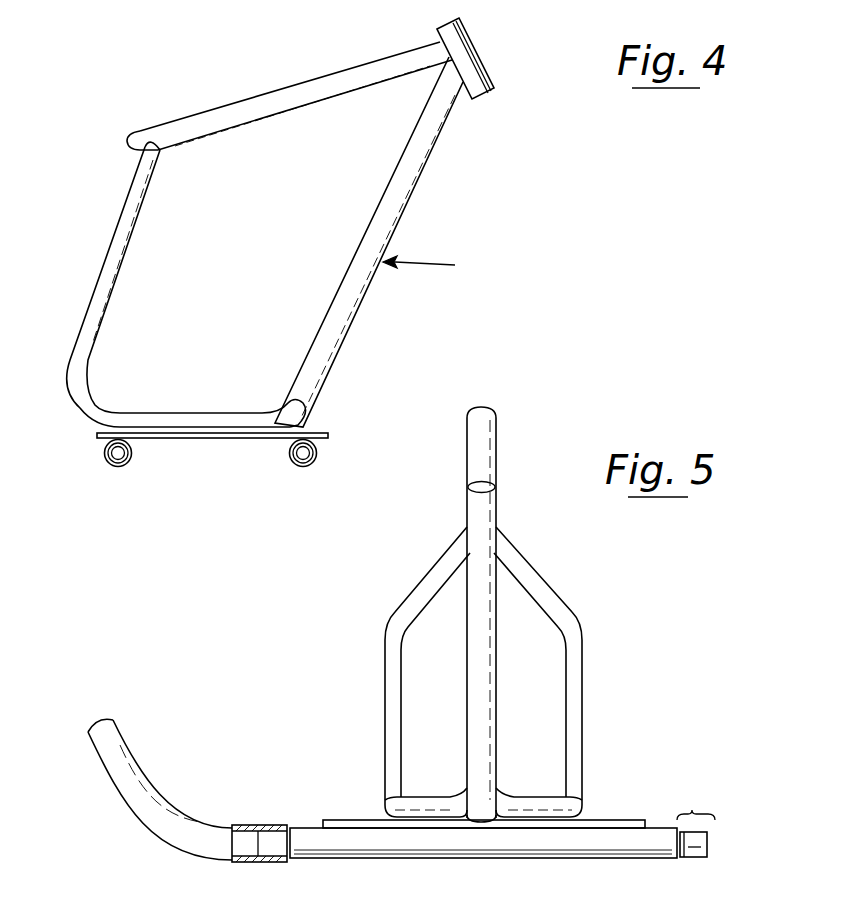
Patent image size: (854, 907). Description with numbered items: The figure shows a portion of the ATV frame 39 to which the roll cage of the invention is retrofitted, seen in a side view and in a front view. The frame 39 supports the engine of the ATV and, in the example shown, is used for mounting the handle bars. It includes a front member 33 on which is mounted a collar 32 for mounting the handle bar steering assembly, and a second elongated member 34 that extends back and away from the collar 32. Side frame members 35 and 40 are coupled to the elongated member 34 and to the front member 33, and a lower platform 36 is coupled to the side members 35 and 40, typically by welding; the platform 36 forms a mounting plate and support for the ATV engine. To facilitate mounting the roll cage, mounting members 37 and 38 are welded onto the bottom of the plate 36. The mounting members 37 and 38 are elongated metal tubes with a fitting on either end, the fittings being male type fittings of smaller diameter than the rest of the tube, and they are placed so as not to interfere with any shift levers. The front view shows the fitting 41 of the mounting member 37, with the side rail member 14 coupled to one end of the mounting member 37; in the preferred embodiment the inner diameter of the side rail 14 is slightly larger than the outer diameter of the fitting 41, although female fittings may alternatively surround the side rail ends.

In FIG. 5, the side rail member 14 is at (145, 787).
In FIG. 4, the collar 32 is at (472, 67).
In FIG. 5, the collar 32 is at (485, 448).
In FIG. 4, the front member 33 is at (413, 181).
In FIG. 5, the front member 33 is at (487, 689).
In FIG. 4, the second elongated member 34 is at (302, 88).
In FIG. 4, the side frame member 35 is at (124, 258).
In FIG. 5, the side frame member 35 is at (388, 652).
In FIG. 4, the lower platform 36 is at (318, 428).
In FIG. 5, the lower platform 36 is at (603, 822).
In FIG. 4, the mounting member 37 is at (305, 463).
In FIG. 5, the mounting member 37 is at (632, 858).
In FIG. 4, the mounting member 38 is at (110, 462).
In FIG. 4, the ATV frame 39 is at (433, 269).
In FIG. 5, the side frame member 40 is at (583, 672).
In FIG. 5, the fitting 41 is at (692, 810).